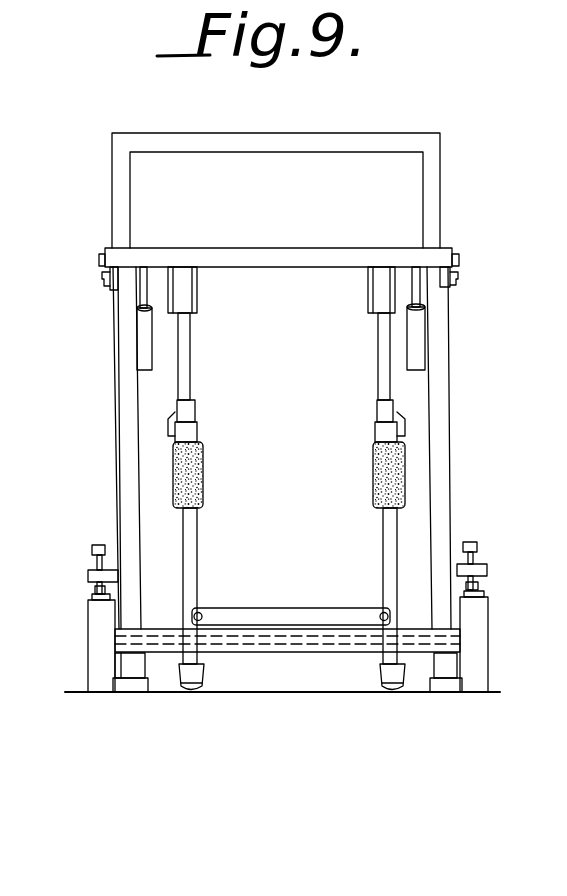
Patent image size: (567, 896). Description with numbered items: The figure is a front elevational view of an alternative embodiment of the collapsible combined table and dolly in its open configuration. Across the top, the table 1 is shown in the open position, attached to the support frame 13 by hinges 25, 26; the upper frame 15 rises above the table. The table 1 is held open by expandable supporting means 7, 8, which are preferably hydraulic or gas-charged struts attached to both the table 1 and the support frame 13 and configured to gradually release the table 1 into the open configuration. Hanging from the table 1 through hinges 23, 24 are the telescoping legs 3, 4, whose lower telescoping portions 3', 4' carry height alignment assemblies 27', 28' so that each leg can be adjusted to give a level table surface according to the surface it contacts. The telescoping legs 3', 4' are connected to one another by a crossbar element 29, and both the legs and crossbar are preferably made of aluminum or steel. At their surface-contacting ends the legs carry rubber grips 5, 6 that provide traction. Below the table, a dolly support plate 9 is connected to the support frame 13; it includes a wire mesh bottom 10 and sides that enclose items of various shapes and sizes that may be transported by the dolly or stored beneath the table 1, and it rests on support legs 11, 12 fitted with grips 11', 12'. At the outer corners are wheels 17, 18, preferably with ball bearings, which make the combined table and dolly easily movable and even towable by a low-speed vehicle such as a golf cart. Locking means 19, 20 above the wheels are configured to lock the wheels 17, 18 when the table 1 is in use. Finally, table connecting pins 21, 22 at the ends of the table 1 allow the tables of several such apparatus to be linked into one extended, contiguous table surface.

The table 1 is at (224, 250).
The telescoping leg 3 is at (362, 367).
The telescoping leg 3' is at (361, 586).
The telescoping leg 4 is at (202, 367).
The telescoping leg 4' is at (211, 586).
The grip 5 is at (392, 690).
The grip 6 is at (193, 690).
The expandable supporting means 7 is at (416, 346).
The expandable supporting means 8 is at (148, 347).
The dolly support plate 9 is at (222, 652).
The wire mesh bottom 10 is at (333, 652).
The support leg 11 is at (423, 729).
The grip 11' is at (447, 702).
The support leg 12 is at (155, 737).
The grip 12' is at (145, 709).
The support frame 13 is at (451, 428).
The upper frame 15 is at (131, 137).
The wheel 17 is at (480, 680).
The wheel 18 is at (100, 692).
The locking means 19 is at (481, 566).
The locking means 20 is at (92, 573).
The table connecting pin 21 is at (457, 258).
The table connecting pin 22 is at (100, 257).
The hinge 23 is at (368, 290).
The hinge 24 is at (198, 290).
The hinge 25 is at (452, 284).
The hinge 26 is at (109, 287).
The height alignment assembly 27' is at (354, 453).
The height alignment assembly 28' is at (217, 458).
The crossbar element 29 is at (283, 608).